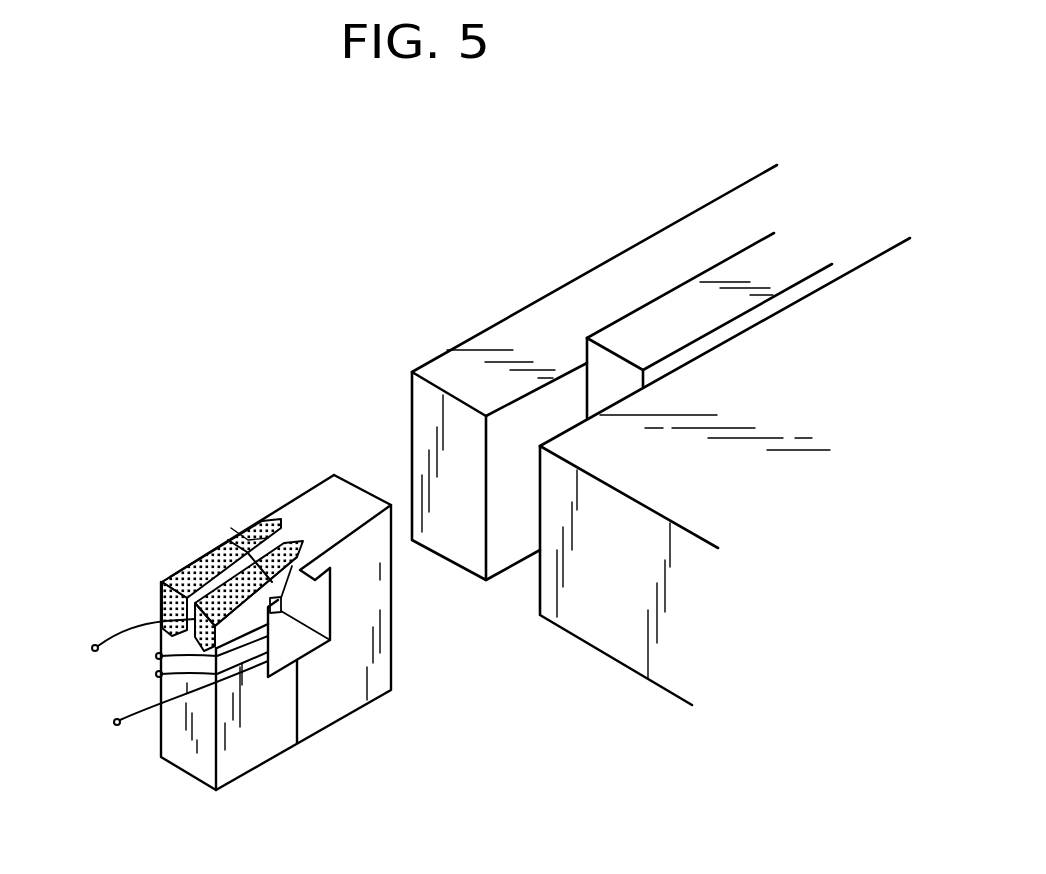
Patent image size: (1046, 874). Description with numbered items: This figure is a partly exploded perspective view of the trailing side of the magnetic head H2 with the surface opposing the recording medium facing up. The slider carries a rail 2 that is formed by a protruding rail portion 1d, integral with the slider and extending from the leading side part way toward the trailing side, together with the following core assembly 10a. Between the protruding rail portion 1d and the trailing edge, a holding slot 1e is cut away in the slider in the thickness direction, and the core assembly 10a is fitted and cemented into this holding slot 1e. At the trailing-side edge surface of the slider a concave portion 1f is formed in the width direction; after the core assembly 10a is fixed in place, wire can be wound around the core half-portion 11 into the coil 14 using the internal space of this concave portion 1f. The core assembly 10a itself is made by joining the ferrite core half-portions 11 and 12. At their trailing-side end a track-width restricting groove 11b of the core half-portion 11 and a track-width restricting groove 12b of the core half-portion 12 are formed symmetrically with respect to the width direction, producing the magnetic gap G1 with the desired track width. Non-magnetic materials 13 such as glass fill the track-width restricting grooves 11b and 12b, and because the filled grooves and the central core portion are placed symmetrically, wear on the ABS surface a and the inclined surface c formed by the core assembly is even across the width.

The magnetic head H2 is at (661, 407).
The rail 2 is at (697, 279).
The protruding rail portion 1d is at (700, 313).
The holding slot 1e is at (608, 376).
The concave portion 1f is at (597, 594).
The core assembly 10a is at (235, 590).
The core half-portion 11 is at (288, 607).
The core half-portion 12 is at (257, 745).
The non-magnetic material 13 is at (183, 545).
The coil 14 is at (170, 681).
The ABS surface a is at (337, 508).
The inclined surface c is at (193, 568).
The magnetic gap G1 is at (228, 540).
The track-width restricting groove 11b is at (162, 581).
The track-width restricting groove 12b is at (193, 618).